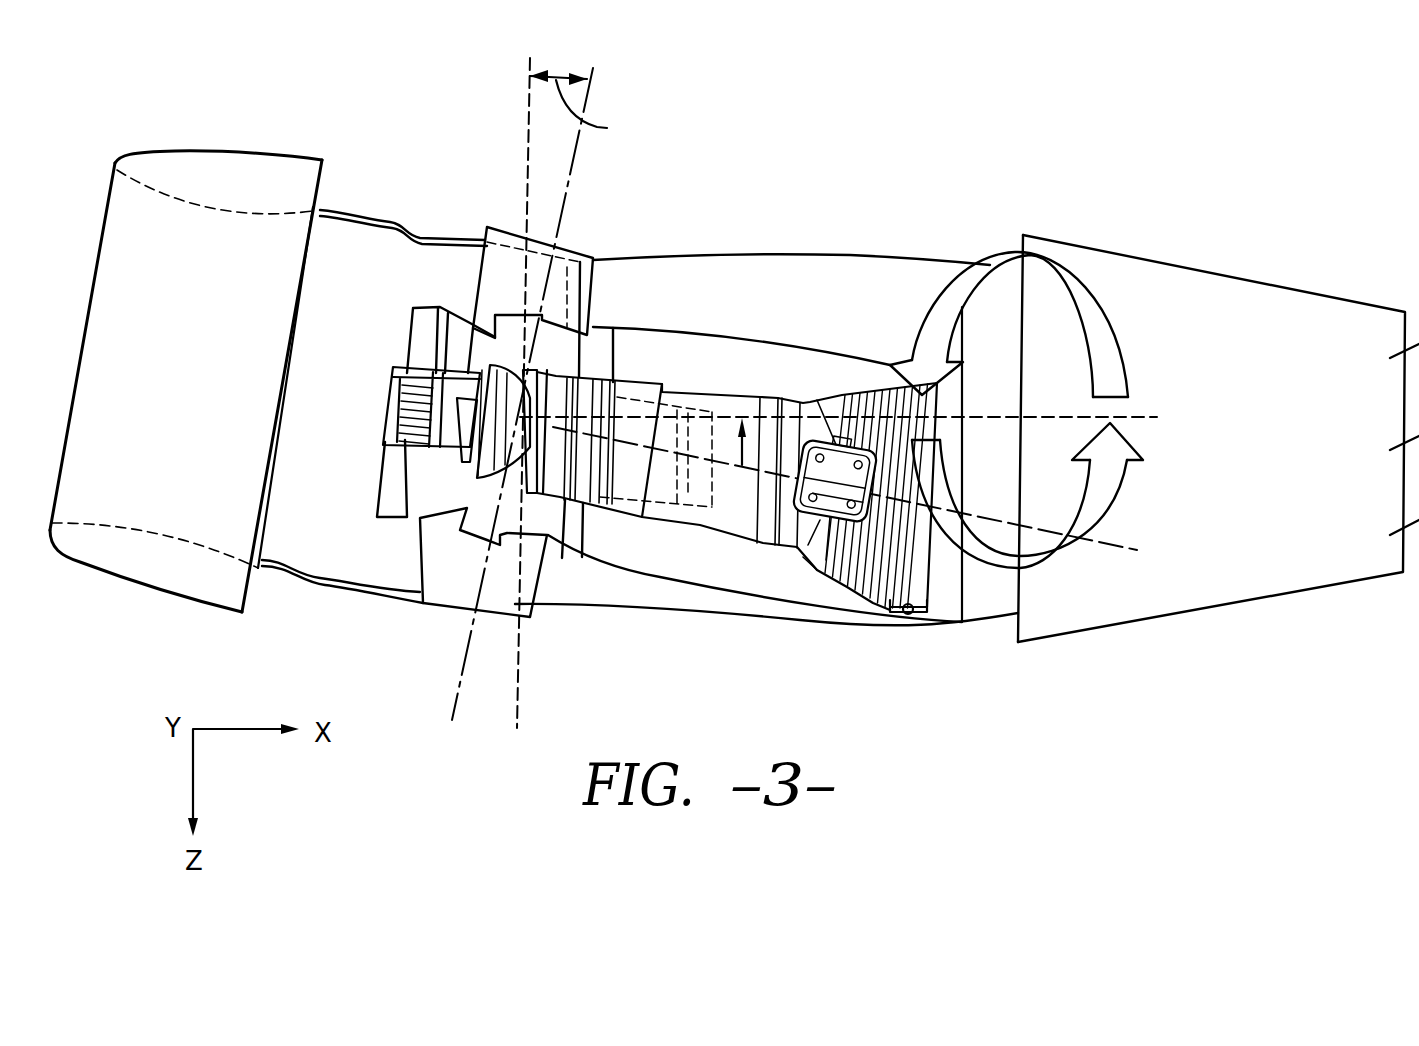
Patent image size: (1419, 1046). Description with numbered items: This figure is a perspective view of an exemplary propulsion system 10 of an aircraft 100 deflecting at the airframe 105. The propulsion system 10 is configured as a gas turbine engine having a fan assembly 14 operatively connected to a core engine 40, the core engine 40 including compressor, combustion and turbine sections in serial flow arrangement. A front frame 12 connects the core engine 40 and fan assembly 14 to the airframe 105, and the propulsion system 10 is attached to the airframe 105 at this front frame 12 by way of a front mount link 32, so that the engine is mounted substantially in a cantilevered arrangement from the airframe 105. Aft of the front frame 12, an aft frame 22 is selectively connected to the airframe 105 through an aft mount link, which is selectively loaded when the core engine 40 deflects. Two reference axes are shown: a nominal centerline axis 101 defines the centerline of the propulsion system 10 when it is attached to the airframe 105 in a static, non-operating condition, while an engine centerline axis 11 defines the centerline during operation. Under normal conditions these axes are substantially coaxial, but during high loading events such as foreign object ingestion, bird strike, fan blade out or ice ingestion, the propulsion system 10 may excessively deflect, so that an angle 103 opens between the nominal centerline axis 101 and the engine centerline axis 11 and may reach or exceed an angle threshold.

The propulsion system 10 is at (613, 288).
The engine centerline axis 11 is at (880, 606).
The front frame 12 is at (465, 396).
The fan assembly 14 is at (447, 280).
The aft frame 22 is at (800, 530).
The front mount link 32 is at (505, 424).
The core engine 40 is at (701, 368).
The aircraft 100 is at (975, 146).
The nominal centerline axis 101 is at (1022, 290).
The angle 103 is at (695, 635).
The airframe 105 is at (592, 612).